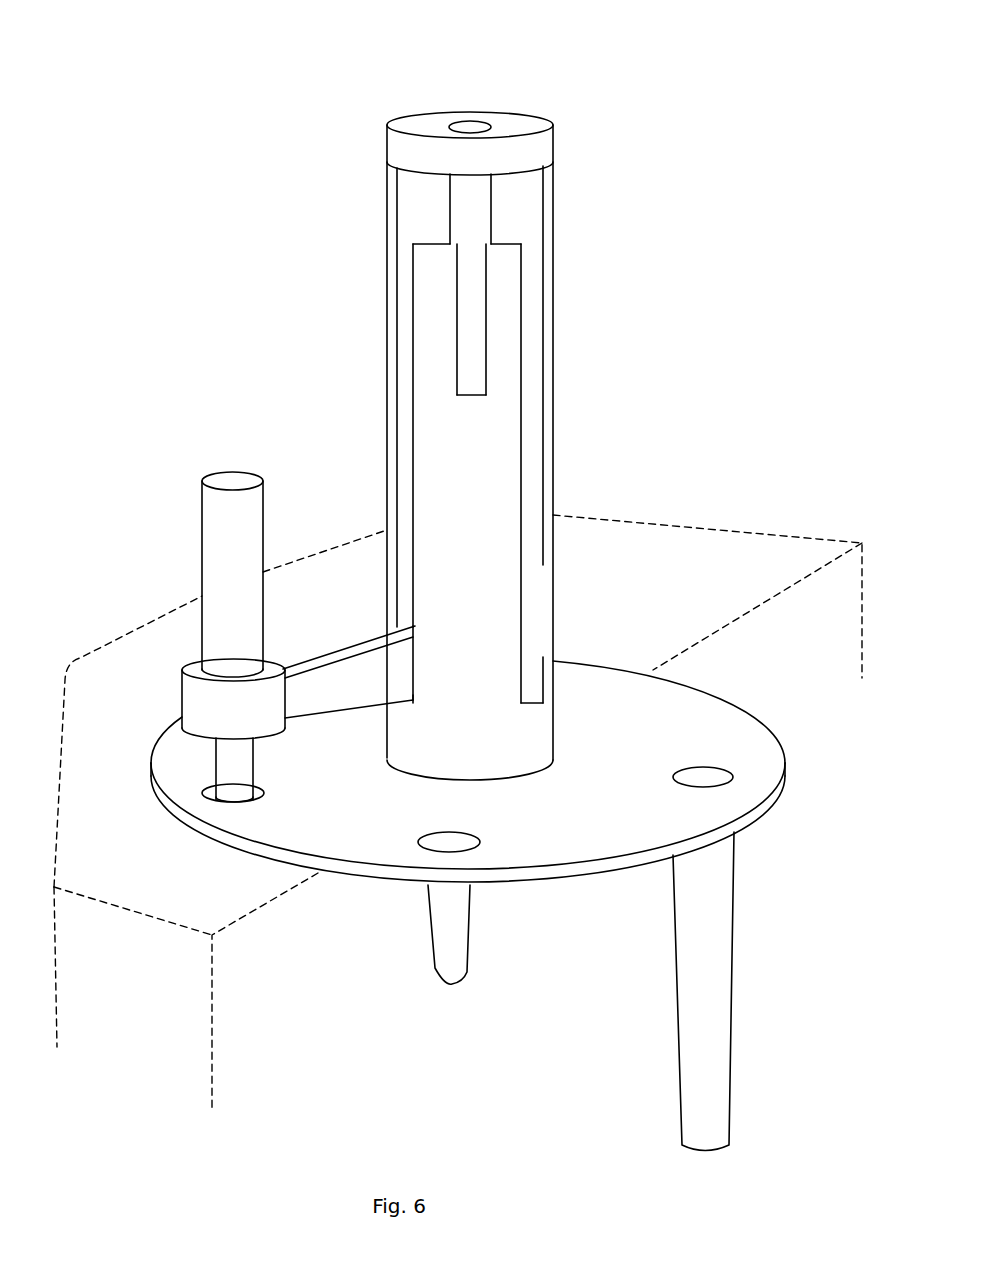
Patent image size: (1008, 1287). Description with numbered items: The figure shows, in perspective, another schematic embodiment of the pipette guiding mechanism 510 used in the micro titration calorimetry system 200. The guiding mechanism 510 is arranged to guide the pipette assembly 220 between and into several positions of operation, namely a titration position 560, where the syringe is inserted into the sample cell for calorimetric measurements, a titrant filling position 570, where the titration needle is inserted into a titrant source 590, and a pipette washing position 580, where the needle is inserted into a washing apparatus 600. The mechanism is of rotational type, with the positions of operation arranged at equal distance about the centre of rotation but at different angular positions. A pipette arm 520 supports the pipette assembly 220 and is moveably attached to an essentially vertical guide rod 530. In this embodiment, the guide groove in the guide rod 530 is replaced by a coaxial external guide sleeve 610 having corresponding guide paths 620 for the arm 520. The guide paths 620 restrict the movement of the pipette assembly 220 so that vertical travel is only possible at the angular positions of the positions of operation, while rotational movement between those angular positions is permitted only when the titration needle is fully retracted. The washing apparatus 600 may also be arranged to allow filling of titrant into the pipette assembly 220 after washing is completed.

The micro titration calorimetry system 200 is at (158, 222).
The pipette assembly 220 is at (213, 523).
The pipette guiding mechanism 510 is at (533, 78).
The pipette arm 520 is at (357, 667).
The guide rod 530 is at (480, 218).
The titration position 560 is at (233, 802).
The titrant filling position 570 is at (470, 848).
The pipette washing position 580 is at (725, 787).
The titrant source 590 is at (465, 977).
The washing apparatus 600 is at (683, 1048).
The coaxial external guide sleeve 610 is at (532, 738).
The guide paths 620 is at (532, 492).